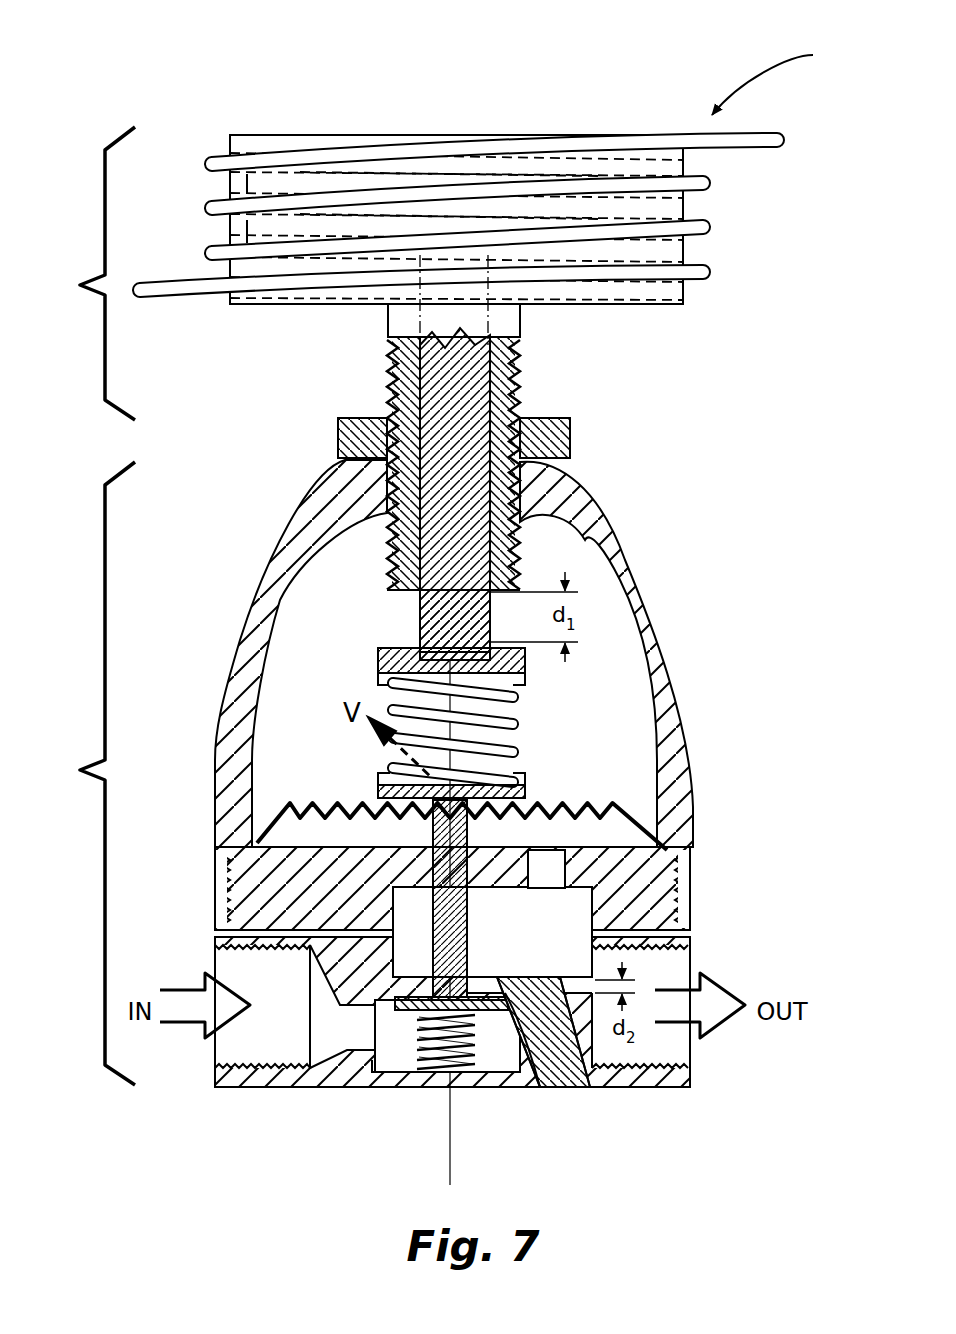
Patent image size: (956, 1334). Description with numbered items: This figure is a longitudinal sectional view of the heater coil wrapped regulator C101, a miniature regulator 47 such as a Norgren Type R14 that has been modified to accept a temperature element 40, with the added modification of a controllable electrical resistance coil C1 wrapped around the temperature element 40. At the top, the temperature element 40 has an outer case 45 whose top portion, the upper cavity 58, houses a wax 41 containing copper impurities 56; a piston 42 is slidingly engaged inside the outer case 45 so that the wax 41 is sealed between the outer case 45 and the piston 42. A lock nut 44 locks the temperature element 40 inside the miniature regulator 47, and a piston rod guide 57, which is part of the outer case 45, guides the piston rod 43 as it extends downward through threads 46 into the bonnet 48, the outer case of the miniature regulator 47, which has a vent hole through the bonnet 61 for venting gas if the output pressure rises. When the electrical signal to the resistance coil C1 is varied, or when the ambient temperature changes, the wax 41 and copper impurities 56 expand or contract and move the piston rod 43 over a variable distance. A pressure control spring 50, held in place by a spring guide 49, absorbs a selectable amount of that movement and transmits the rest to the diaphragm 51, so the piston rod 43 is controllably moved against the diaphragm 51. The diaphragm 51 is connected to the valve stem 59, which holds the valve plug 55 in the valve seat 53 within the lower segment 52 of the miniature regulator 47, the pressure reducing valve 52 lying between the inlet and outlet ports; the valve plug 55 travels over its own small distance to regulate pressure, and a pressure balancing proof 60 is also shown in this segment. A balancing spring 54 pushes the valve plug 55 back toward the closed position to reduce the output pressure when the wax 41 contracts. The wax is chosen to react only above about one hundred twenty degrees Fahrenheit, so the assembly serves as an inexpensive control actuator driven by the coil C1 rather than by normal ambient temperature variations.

The temperature element 40 is at (81, 273).
The wax 41 is at (680, 215).
The piston 42 is at (638, 250).
The piston rod 43 is at (467, 537).
The lock nut 44 is at (570, 421).
The outer case 45 is at (502, 197).
The threads 46 is at (557, 478).
The miniature regulator 47 is at (79, 773).
The bonnet 48 is at (522, 512).
The spring guide 49 is at (527, 673).
The pressure control spring 50 is at (393, 717).
The diaphragm 51 is at (573, 793).
The pressure reducing valve 52 is at (548, 980).
The valve seat 53 is at (375, 1040).
The balancing spring 54 is at (410, 1060).
The valve plug 55 is at (527, 1040).
The copper impurities 56 is at (363, 175).
The piston rod guide 57 is at (445, 605).
The upper cavity 58 is at (520, 203).
The valve stem 59 is at (470, 955).
The pressure balancing proof 60 is at (547, 854).
The vent hole through the bonnet 61 is at (296, 532).
The electrical resistance coil C1 is at (705, 268).
The heater coil wrapped regulator C101 is at (800, 79).